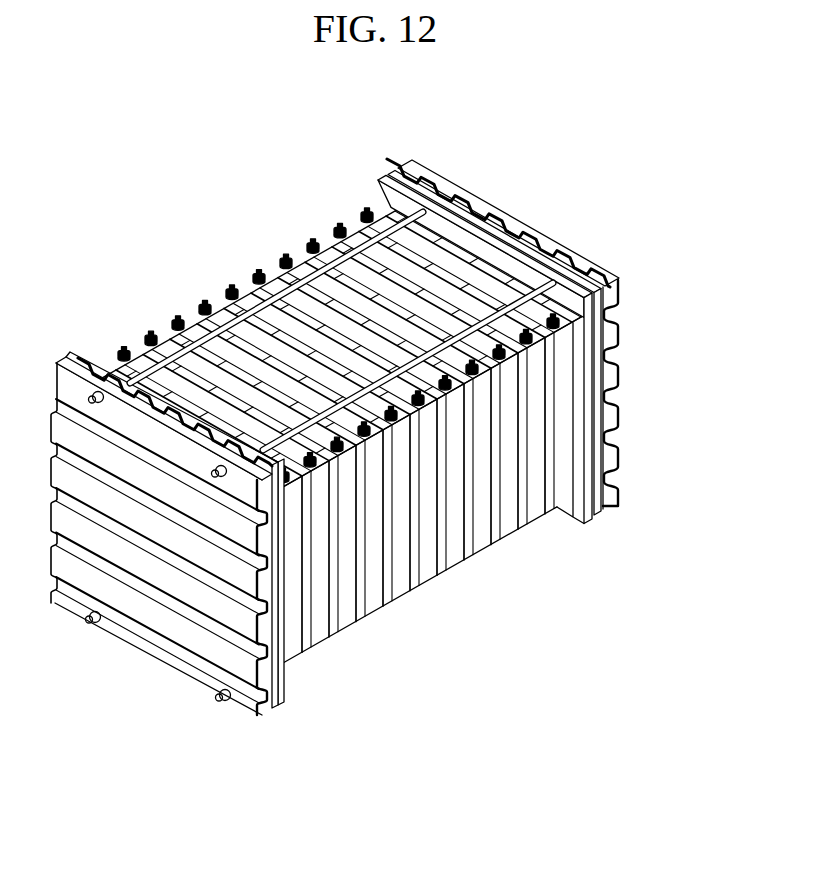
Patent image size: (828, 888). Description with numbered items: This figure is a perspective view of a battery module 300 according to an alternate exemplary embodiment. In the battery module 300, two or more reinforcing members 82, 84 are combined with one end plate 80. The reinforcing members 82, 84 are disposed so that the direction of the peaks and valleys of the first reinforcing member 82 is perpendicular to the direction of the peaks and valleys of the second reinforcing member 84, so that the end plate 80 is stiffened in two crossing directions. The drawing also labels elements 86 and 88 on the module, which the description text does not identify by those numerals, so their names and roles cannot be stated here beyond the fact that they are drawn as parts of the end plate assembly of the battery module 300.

The battery module 300 is at (373, 461).
The end plate 80 is at (572, 513).
The reinforcing member 82 is at (600, 518).
The reinforcing member 84 is at (612, 500).
The serpentine member 86 is at (503, 234).
The corrugation 88 is at (615, 404).